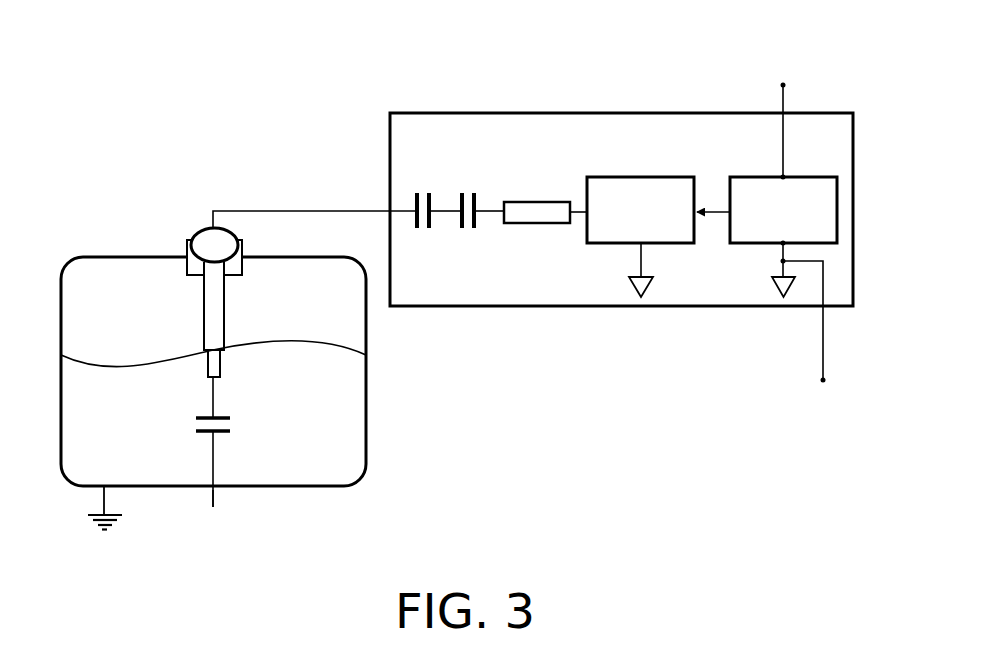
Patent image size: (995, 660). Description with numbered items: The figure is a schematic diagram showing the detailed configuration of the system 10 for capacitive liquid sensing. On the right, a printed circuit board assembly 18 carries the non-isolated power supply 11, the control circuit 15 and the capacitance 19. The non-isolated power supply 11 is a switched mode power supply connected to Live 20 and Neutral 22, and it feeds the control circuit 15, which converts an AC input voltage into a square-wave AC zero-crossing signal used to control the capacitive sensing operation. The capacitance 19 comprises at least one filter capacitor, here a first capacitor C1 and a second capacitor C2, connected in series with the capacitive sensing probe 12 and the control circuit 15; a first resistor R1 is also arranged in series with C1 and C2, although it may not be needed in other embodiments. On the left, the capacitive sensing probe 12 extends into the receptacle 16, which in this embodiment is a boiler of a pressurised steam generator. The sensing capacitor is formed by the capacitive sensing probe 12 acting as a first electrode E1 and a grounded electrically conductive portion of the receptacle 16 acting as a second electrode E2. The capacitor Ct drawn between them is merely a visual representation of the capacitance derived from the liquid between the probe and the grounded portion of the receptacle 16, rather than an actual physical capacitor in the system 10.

The system 10 is at (181, 108).
The non-isolated power supply 11 is at (795, 220).
The capacitive sensing probe 12 is at (193, 225).
The control circuit 15 is at (652, 220).
The receptacle 16 is at (345, 461).
The printed circuit board assembly 18 is at (620, 146).
The capacitance 19 is at (436, 157).
The Live 20 is at (783, 119).
The Neutral 22 is at (810, 337).
The first capacitor C1 is at (436, 198).
The second capacitor C2 is at (479, 198).
The first resistor R1 is at (545, 195).
The capacitor Ct is at (228, 460).
The first electrode E1 is at (228, 367).
The second electrode E2 is at (228, 507).